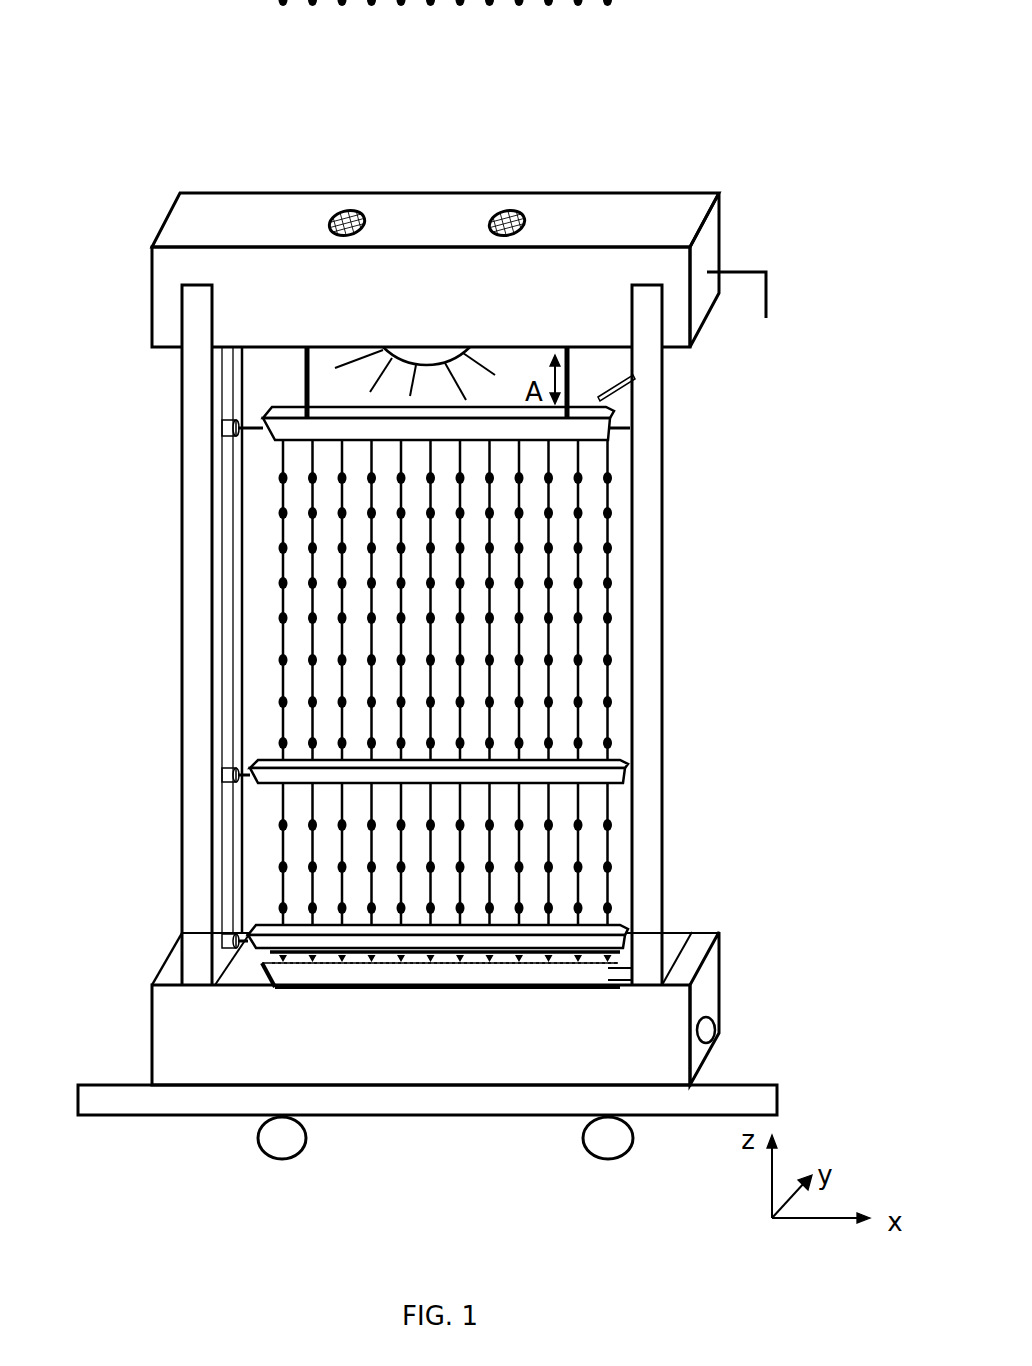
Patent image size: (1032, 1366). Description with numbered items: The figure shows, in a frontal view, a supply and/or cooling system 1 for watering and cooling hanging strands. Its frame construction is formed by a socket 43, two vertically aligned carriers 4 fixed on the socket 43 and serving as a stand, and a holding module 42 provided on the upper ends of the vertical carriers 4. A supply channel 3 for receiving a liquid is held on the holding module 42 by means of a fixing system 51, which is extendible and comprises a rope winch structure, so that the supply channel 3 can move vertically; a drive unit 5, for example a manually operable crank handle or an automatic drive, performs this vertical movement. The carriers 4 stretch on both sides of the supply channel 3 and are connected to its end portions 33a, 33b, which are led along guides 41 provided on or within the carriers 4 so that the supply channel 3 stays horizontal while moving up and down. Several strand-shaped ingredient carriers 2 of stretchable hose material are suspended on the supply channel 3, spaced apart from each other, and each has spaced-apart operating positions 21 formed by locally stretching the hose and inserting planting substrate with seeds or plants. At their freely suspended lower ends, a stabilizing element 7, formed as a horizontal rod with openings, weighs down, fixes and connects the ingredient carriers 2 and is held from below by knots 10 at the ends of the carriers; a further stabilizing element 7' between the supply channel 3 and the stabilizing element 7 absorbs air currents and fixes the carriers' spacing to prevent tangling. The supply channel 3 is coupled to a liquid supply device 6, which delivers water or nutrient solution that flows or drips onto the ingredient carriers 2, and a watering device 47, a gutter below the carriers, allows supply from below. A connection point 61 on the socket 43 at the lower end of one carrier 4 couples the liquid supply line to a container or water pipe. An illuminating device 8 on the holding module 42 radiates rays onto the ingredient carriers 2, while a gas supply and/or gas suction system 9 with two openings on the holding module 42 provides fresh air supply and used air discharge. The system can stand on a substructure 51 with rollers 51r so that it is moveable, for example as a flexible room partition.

The supply and/or cooling system 1 is at (680, 119).
The ingredient carrier 2 is at (608, 457).
The operating position 21 is at (608, 513).
The supply channel 3 is at (588, 427).
The end portion 33a is at (248, 428).
The end portion 33b is at (620, 430).
The vertical carrier 4 is at (198, 513).
The guide 41 is at (227, 558).
The holding module 42 is at (275, 278).
The socket 43 is at (230, 1063).
The watering device 47 is at (302, 973).
The drive unit 5 is at (745, 267).
The fixing system / substructure 51 is at (297, 368).
The rollers 51r is at (608, 1160).
The liquid supply device 6 is at (630, 380).
The stabilizing element 7 is at (534, 915).
The further stabilizing element 7' is at (534, 751).
The illuminating device 8 is at (410, 352).
The gas supply and/or gas suction system 9 is at (427, 148).
The knot 10 is at (615, 955).
The connection point 61 is at (718, 1030).